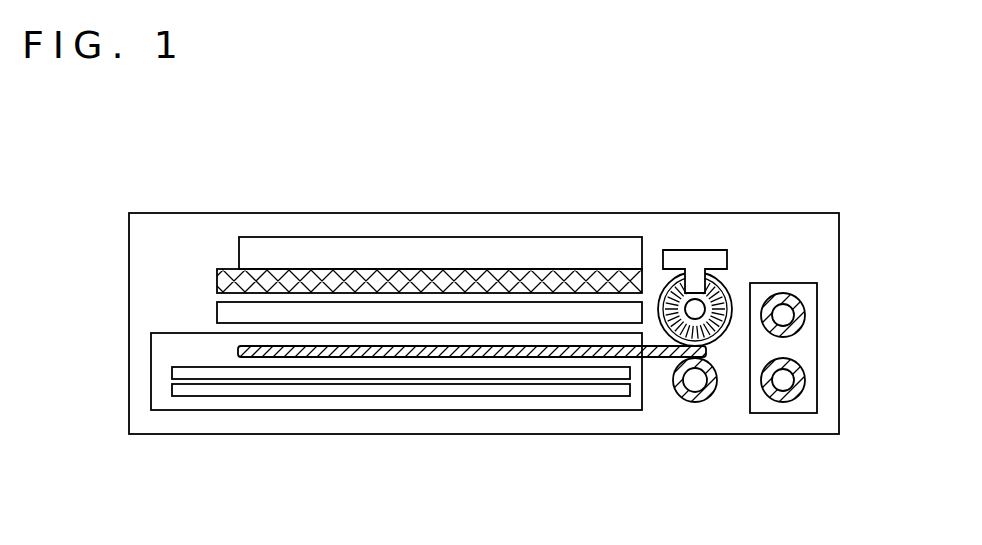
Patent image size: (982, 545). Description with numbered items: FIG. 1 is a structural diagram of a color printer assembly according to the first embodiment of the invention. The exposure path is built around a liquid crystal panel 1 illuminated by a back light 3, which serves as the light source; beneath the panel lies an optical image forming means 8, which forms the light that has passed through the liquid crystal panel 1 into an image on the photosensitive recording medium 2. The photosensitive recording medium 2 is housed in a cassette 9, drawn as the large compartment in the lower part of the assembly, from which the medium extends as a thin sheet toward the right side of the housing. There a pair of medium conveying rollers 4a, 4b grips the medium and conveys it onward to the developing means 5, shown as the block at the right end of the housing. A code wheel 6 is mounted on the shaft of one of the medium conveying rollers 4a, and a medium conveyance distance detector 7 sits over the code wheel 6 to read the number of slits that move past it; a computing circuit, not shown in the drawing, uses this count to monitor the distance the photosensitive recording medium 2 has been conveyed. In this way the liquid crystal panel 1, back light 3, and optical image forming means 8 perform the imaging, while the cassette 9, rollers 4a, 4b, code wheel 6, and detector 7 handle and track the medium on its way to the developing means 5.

The liquid crystal panel 1 is at (230, 268).
The photosensitive recording medium 2 is at (657, 358).
The back light 3 is at (317, 240).
The medium conveying roller 4a is at (733, 296).
The medium conveying roller 4b is at (710, 390).
The developing means 5 is at (813, 293).
The code wheel 6 is at (728, 277).
The medium conveyance distance detector 7 is at (697, 255).
The optical image forming means 8 is at (220, 310).
The cassette 9 is at (203, 405).